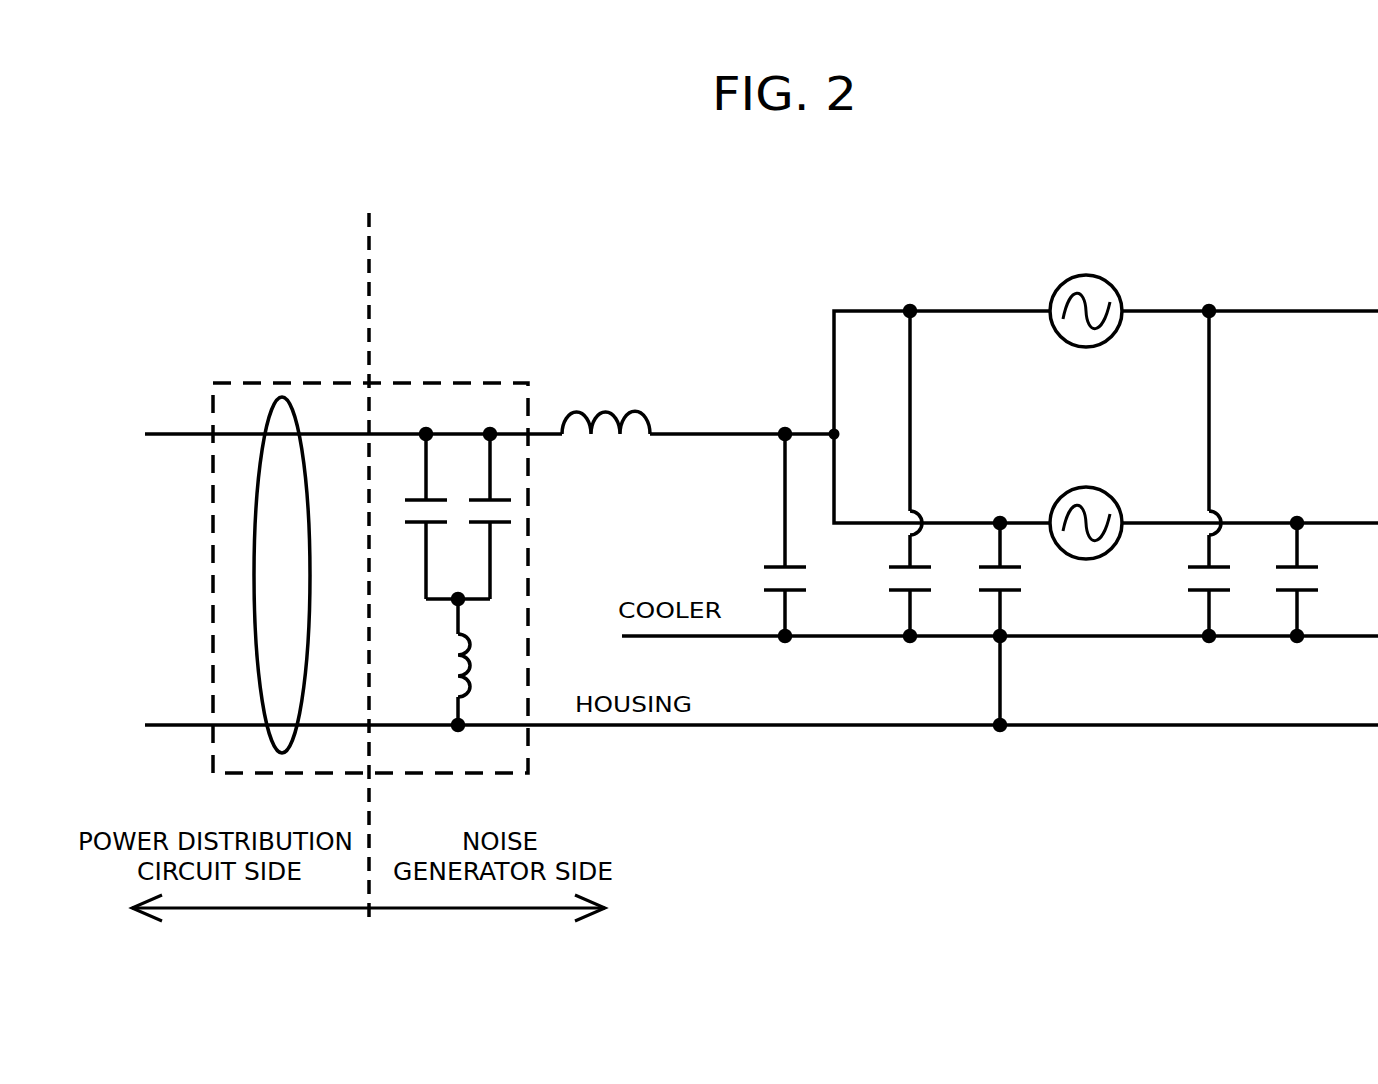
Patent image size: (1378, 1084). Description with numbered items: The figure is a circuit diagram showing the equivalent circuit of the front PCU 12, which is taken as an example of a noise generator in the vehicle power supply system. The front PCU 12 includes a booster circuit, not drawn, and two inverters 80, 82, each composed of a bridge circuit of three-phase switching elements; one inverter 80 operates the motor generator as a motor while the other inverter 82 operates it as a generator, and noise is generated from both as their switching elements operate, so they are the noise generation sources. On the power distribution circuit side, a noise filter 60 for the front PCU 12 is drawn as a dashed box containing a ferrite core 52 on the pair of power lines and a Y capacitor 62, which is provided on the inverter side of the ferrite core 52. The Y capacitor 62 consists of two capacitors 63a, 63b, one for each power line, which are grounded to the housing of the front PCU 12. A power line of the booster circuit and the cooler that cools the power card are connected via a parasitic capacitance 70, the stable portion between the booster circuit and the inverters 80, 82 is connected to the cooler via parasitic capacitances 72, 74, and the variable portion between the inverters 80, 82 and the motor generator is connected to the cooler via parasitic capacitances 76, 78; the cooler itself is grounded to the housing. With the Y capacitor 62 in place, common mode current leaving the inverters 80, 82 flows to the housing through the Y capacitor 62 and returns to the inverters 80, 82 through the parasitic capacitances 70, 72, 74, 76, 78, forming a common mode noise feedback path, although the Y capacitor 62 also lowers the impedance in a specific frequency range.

The front PCU 12 is at (681, 282).
The ferrite core 52 is at (267, 420).
The noise filter 60 is at (312, 383).
The Y capacitor 62 is at (455, 473).
The capacitor 63a is at (412, 498).
The capacitor 63b is at (497, 525).
The parasitic capacitance 70 is at (793, 593).
The parasitic capacitance 72 is at (918, 593).
The parasitic capacitance 74 is at (1008, 593).
The parasitic capacitance 76 is at (1216, 593).
The parasitic capacitance 78 is at (1305, 593).
The inverter 80 is at (1090, 274).
The inverter 82 is at (1087, 487).